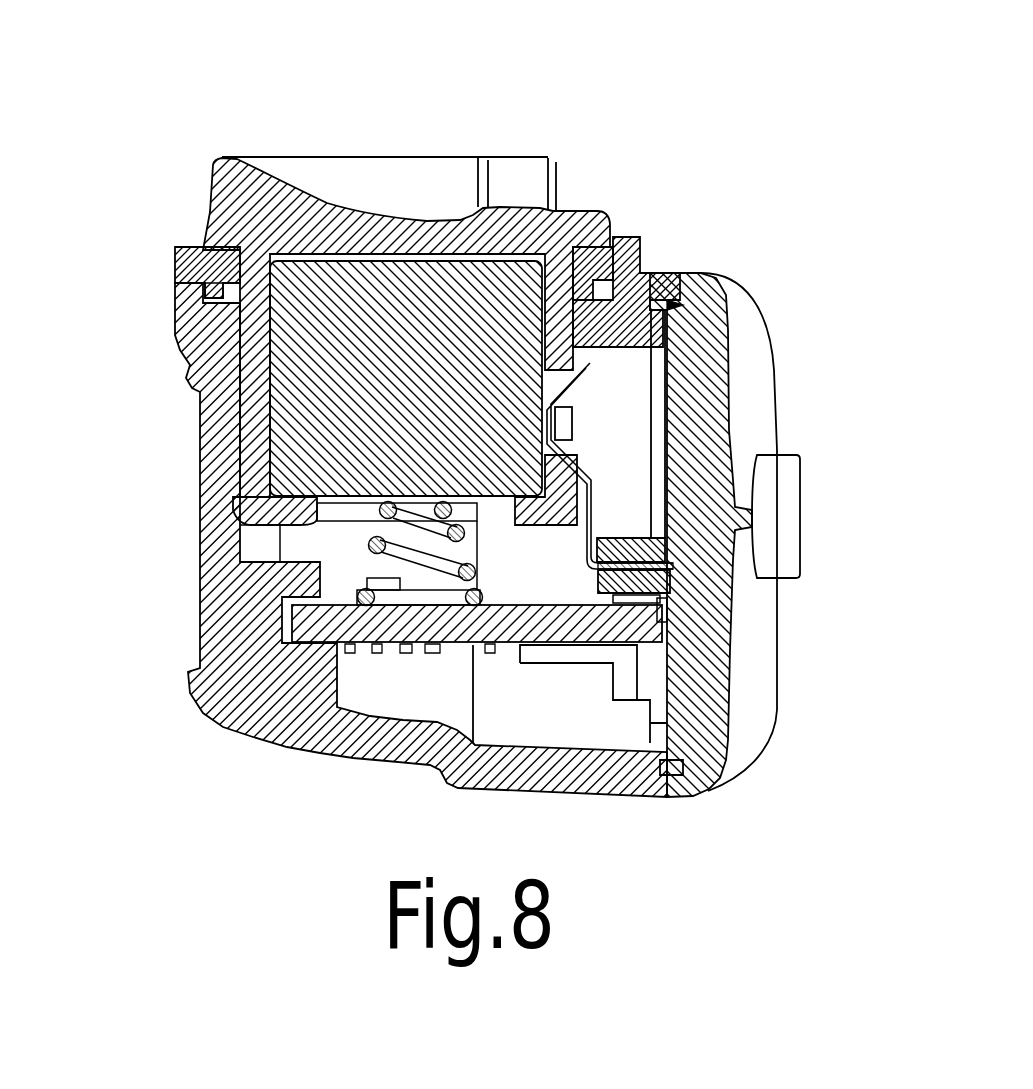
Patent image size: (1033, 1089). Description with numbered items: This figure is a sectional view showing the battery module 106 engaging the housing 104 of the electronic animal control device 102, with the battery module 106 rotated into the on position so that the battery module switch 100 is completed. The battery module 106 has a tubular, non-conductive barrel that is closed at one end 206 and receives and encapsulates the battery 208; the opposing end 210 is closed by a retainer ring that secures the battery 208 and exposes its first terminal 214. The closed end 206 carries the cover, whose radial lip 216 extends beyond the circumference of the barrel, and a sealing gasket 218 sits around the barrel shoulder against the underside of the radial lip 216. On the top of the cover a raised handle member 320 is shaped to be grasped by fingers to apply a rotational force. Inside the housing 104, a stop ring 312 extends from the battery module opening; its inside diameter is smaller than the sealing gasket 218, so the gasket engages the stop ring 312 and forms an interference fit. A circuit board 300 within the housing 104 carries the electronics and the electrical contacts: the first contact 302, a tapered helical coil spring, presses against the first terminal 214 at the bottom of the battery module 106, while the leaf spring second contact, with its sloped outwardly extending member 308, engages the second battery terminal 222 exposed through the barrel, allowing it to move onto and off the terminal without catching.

The battery module switch 100 is at (593, 126).
The electronic animal control device 102 is at (650, 826).
The housing 104 is at (700, 637).
The battery module 106 is at (307, 148).
The closed end 206 is at (203, 230).
The battery 208 is at (517, 287).
The opposing end 210 is at (236, 521).
The first terminal 214 is at (346, 503).
The radial lip 216 is at (600, 243).
The sealing gasket 218 is at (222, 270).
The second battery terminal 222 is at (565, 400).
The circuit board 300 is at (487, 607).
The first contact 302 is at (435, 560).
The outwardly extending member 308 is at (590, 474).
The stop ring 312 is at (603, 330).
The raised handle member 320 is at (448, 185).